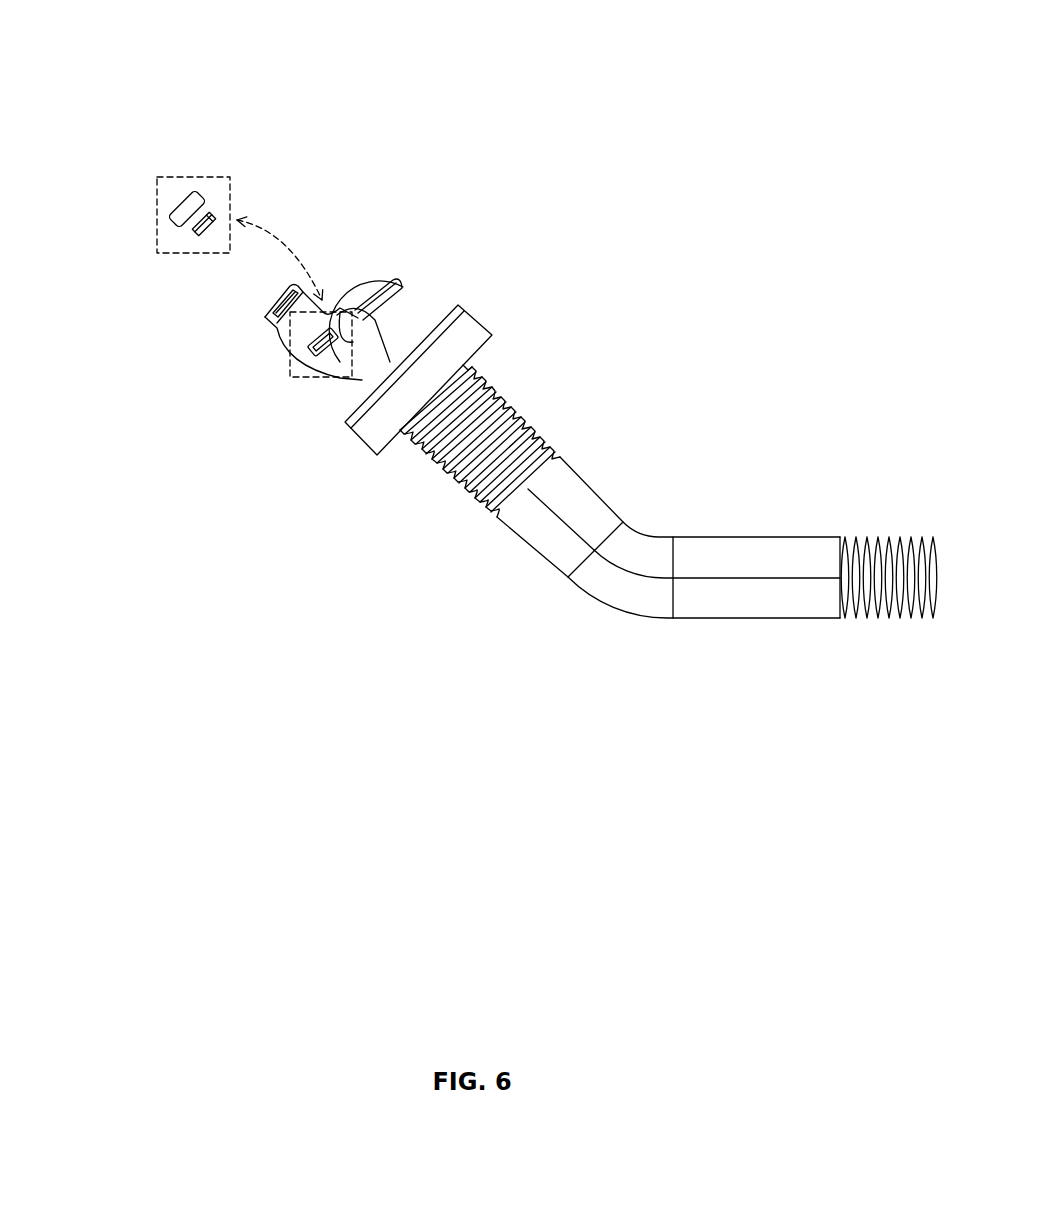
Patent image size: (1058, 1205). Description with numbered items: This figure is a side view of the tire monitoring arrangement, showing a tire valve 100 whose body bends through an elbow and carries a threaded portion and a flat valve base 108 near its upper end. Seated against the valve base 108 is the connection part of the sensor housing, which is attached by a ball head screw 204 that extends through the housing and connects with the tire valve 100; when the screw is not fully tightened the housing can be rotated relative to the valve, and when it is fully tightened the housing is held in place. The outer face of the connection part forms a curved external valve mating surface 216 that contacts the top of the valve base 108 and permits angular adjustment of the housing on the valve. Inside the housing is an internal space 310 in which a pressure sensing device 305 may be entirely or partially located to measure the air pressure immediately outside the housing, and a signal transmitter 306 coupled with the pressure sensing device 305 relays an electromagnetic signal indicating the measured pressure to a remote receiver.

The tire valve 100 is at (802, 392).
The valve base 108 is at (649, 237).
The ball head screw 204 is at (392, 146).
The external valve mating surface 216 is at (611, 101).
The pressure sensing device 305 is at (76, 121).
The signal transmitter 306 is at (284, 37).
The internal space 310 is at (212, 240).